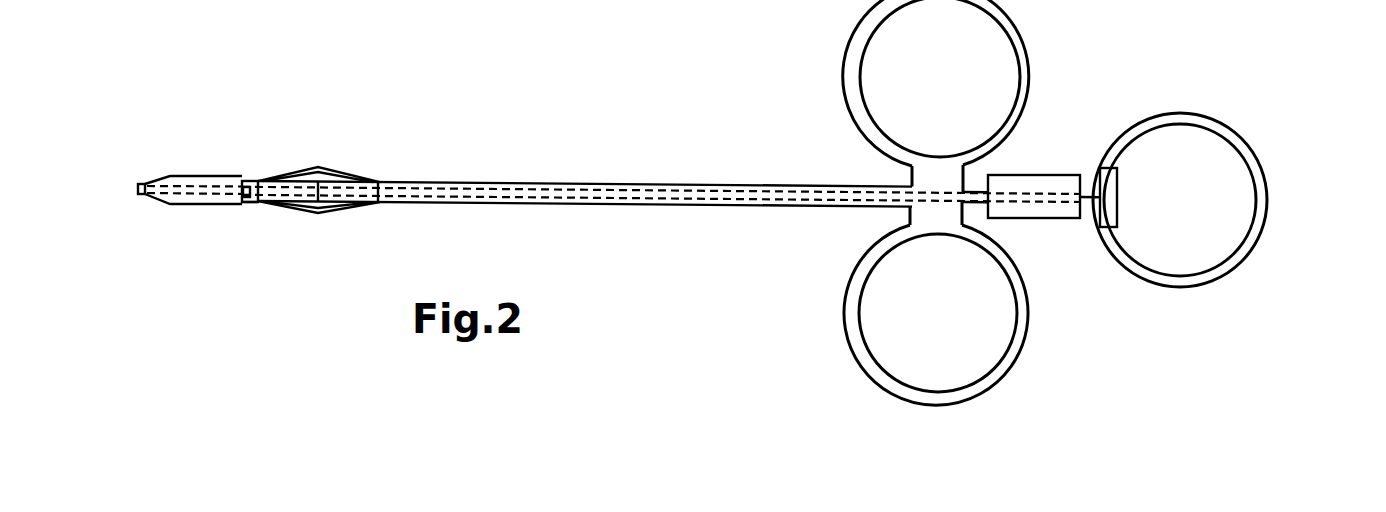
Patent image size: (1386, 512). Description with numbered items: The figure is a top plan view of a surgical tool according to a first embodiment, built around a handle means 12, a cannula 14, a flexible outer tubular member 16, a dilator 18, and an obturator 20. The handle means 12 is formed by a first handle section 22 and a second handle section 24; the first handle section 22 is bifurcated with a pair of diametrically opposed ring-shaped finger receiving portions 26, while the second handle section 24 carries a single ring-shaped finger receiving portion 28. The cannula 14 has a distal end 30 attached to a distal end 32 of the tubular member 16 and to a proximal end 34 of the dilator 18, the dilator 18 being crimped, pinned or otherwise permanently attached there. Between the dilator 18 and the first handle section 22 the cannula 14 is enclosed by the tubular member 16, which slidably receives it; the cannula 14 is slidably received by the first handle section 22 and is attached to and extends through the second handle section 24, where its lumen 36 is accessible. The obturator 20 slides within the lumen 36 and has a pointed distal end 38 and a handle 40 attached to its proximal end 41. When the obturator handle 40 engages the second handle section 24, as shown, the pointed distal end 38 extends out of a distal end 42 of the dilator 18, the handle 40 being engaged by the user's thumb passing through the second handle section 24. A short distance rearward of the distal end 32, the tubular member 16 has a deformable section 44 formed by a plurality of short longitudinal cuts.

The handle means 12 is at (735, 202).
The cannula 14 is at (661, 153).
The flexible outer tubular member 16 is at (585, 231).
The dilator 18 is at (201, 226).
The obturator 20 is at (195, 150).
The first handle section 22 is at (854, 223).
The second handle section 24 is at (1046, 249).
The ring-shaped finger receiving portions 26 is at (951, 202).
The ring-shaped finger receiving portion 28 is at (1239, 200).
The distal end of the cannula 30 is at (268, 231).
The distal end of the tubular member 32 is at (267, 152).
The proximal end of the dilator 34 is at (269, 136).
The lumen 36 is at (717, 149).
The pointed distal end of the obturator 38 is at (141, 94).
The obturator handle 40 is at (1148, 201).
The proximal end of the obturator 41 is at (1124, 153).
The distal end of the dilator 42 is at (161, 219).
The deformable section 44 is at (349, 158).